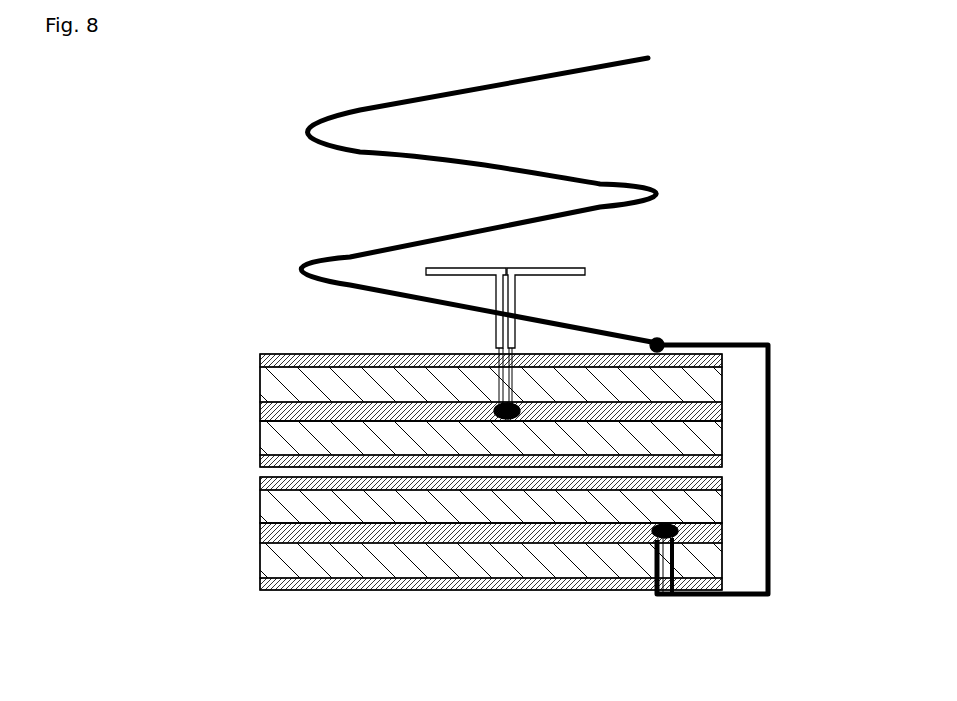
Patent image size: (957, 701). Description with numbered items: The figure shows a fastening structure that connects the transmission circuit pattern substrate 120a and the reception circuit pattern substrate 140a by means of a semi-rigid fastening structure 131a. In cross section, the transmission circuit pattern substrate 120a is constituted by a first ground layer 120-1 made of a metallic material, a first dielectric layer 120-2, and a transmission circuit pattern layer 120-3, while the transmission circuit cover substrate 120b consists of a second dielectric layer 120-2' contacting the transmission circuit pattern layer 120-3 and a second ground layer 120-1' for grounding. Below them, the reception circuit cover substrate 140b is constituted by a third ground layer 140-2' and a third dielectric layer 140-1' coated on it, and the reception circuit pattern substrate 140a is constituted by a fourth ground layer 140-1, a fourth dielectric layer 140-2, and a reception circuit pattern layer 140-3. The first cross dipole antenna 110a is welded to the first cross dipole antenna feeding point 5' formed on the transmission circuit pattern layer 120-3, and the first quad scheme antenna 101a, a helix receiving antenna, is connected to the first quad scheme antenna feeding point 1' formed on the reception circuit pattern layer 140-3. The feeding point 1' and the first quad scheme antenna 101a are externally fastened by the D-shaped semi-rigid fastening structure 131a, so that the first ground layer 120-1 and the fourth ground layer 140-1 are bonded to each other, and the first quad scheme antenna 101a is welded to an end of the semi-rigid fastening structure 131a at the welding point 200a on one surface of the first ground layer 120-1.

The first quad scheme antenna 101a is at (560, 75).
The first cross dipole antenna 110a is at (585, 268).
The welding point 200a is at (657, 343).
The semi-rigid fastening structure 131a is at (770, 448).
The first cross dipole antenna feeding point 5' is at (446, 369).
The first quad scheme antenna feeding point 1' is at (615, 579).
The transmission circuit pattern substrate 120a is at (112, 317).
The transmission circuit cover substrate 120b is at (112, 423).
The first ground layer 120-1 is at (425, 338).
The first dielectric layer 120-2 is at (425, 374).
The transmission circuit pattern layer 120-3 is at (260, 405).
The second dielectric layer 120-2' is at (423, 434).
The second ground layer 120-1' is at (423, 458).
The reception circuit pattern substrate 140a is at (112, 540).
The reception circuit cover substrate 140b is at (112, 480).
The fourth ground layer 140-1 is at (426, 594).
The fourth dielectric layer 140-2 is at (426, 562).
The reception circuit pattern layer 140-3 is at (260, 532).
The third ground layer 140-2' is at (423, 485).
The third dielectric layer 140-1' is at (423, 507).